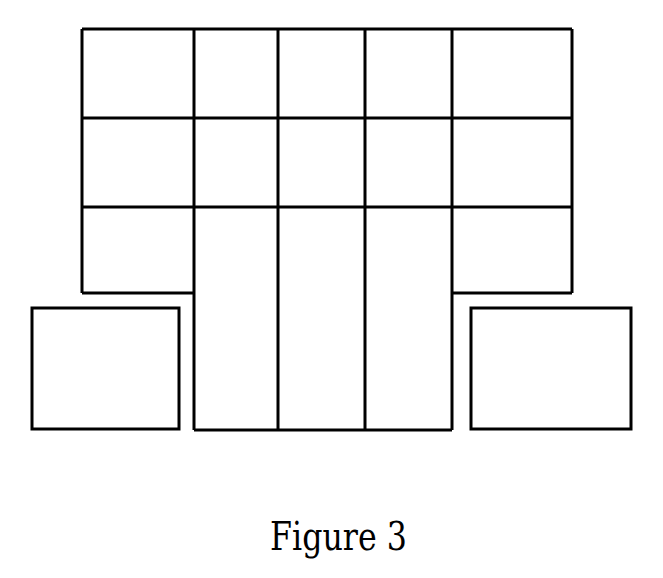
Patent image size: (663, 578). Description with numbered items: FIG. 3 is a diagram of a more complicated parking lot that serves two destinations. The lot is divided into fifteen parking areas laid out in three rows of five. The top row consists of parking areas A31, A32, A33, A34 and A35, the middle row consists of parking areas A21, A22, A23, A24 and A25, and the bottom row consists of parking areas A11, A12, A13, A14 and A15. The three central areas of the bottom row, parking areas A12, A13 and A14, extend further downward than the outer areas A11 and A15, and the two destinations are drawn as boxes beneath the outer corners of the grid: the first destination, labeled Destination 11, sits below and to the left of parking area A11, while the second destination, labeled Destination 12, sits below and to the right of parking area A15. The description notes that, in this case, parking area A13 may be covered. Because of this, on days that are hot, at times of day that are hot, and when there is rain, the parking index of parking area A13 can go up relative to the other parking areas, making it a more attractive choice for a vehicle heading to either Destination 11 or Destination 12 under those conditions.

The parking area A11 is at (138, 250).
The parking area A12 is at (236, 318).
The parking area A13 is at (321, 318).
The parking area A14 is at (408, 318).
The parking area A15 is at (512, 250).
The parking area A21 is at (138, 162).
The parking area A22 is at (236, 162).
The parking area A23 is at (321, 162).
The parking area A24 is at (408, 162).
The parking area A25 is at (512, 162).
The parking area A31 is at (138, 73).
The parking area A32 is at (236, 73).
The parking area A33 is at (321, 73).
The parking area A34 is at (408, 73).
The parking area A35 is at (512, 73).
The Destination 11 is at (105, 368).
The Destination 12 is at (551, 368).